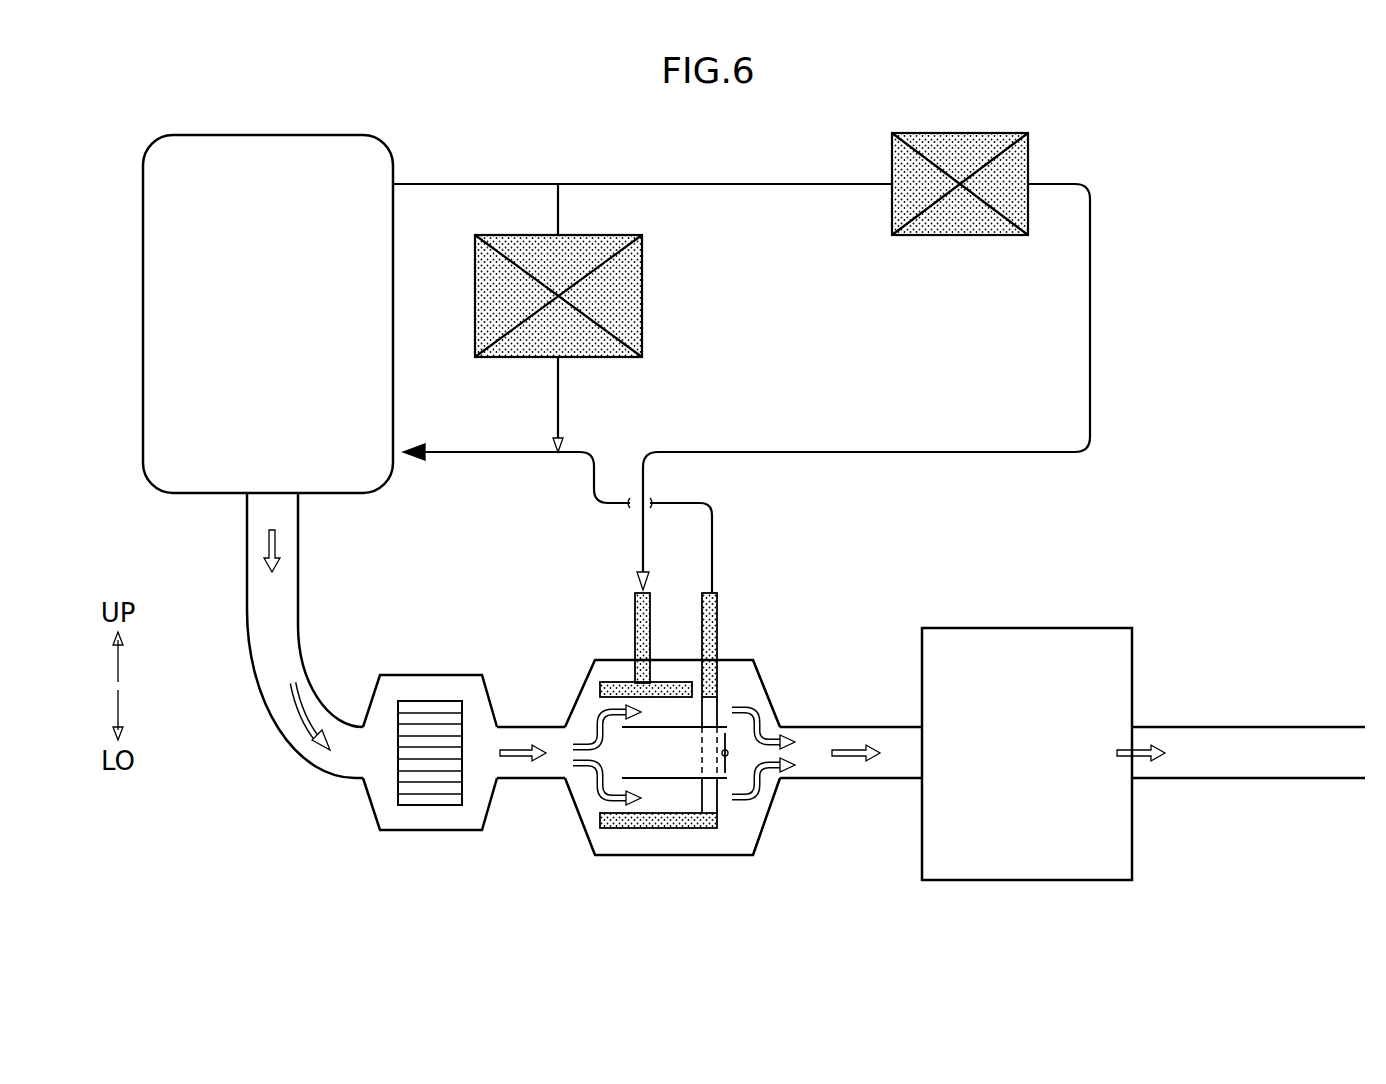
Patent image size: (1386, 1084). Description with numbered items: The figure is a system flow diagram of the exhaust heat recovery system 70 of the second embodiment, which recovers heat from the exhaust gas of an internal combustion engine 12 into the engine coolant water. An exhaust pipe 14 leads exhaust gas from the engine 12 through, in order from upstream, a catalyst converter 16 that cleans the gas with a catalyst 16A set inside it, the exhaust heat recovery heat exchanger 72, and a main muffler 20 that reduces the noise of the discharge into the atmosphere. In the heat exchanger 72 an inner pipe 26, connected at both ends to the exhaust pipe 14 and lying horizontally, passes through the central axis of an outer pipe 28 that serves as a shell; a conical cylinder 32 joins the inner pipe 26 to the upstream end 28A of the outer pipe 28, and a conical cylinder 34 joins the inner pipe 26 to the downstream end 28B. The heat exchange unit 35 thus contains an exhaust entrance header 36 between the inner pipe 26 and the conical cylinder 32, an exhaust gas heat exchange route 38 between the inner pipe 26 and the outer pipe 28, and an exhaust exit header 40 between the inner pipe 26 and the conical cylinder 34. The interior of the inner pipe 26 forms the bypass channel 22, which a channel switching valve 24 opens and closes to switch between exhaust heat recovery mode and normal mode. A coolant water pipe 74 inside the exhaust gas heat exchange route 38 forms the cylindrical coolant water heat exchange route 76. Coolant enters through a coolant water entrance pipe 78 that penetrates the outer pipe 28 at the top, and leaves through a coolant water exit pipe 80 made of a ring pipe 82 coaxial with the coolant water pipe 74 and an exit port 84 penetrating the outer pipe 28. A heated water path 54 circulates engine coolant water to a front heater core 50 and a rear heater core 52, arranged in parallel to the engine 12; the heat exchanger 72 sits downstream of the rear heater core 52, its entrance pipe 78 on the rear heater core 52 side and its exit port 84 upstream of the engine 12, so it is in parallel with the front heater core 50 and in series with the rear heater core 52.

The internal combustion engine 12 is at (395, 146).
The exhaust pipe 14 is at (300, 588).
The catalyst converter 16 is at (430, 737).
The catalyst 16A is at (432, 806).
The main muffler 20 is at (1036, 614).
The bypass channel 22 is at (653, 773).
The channel switching valve 24 is at (767, 696).
The inner pipe 26 is at (719, 722).
The outer pipe 28 is at (600, 858).
The upstream end of the outer pipe 28A is at (586, 715).
The downstream end of the outer pipe 28B is at (754, 856).
The conical cylinder 32 is at (578, 814).
The conical cylinder 34 is at (782, 800).
The heat exchange unit 35 is at (766, 674).
The exhaust entrance header 36 is at (588, 718).
The exhaust gas heat exchange route 38 is at (672, 668).
The exhaust exit header 40 is at (780, 725).
The front heater core 50 is at (646, 275).
The rear heater core 52 is at (1031, 152).
The heated water path 54 is at (800, 186).
The exhaust heat recovery system 70 is at (1261, 182).
The exhaust heat recovery heat exchanger 72 is at (719, 705).
The coolant water pipe 74 is at (632, 830).
The coolant water heat exchange route 76 is at (650, 827).
The coolant water entrance pipe 78 is at (635, 618).
The coolant water exit pipe 80 is at (757, 642).
The ring pipe 82 is at (720, 692).
The exit port 84 is at (718, 608).